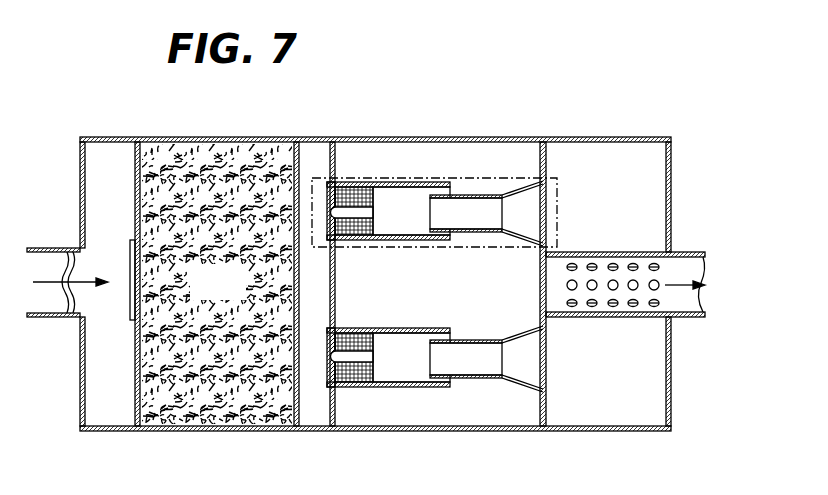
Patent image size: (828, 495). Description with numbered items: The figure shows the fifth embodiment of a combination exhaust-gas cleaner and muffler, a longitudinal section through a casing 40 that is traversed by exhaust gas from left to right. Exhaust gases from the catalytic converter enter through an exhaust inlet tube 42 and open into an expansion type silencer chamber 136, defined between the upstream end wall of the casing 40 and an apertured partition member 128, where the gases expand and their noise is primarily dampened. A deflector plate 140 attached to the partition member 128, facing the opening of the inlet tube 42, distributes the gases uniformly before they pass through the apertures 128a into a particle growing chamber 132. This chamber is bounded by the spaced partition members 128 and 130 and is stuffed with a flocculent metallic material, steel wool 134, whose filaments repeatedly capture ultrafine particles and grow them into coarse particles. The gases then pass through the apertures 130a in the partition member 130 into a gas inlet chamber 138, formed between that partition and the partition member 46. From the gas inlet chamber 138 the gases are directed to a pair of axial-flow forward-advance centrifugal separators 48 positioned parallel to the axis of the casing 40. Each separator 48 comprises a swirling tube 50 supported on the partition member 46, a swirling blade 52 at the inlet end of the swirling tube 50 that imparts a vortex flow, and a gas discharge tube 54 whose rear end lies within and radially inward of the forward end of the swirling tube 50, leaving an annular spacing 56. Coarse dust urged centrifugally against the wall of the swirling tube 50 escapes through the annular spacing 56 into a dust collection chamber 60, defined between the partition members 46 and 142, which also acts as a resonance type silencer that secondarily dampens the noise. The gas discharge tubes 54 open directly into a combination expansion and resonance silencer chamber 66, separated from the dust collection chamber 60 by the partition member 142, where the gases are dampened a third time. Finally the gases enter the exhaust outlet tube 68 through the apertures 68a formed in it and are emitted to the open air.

The casing 40 is at (328, 138).
The exhaust inlet tube 42 is at (46, 318).
The partition member 46 is at (335, 263).
The centrifugal separator 48 is at (522, 168).
The swirling tube 50 is at (413, 183).
The swirling blade 52 is at (358, 183).
The gas discharge tube 54 is at (462, 195).
The annular spacing 56 is at (450, 383).
The dust collection chamber 60 is at (487, 306).
The combination expansion and resonance silencer chamber 66 is at (620, 204).
The exhaust outlet tube 68 is at (687, 320).
The apertures 68a is at (613, 308).
The partition member 128 is at (137, 172).
The apertures 128a is at (136, 400).
The partition member 130 is at (310, 183).
The apertures 130a is at (300, 405).
The particle growing chamber 132 is at (235, 295).
The steel wool 134 is at (200, 407).
The expansion type silencer chamber 136 is at (127, 222).
The gas inlet chamber 138 is at (316, 305).
The deflector plate 140 is at (132, 320).
The partition member 142 is at (546, 162).